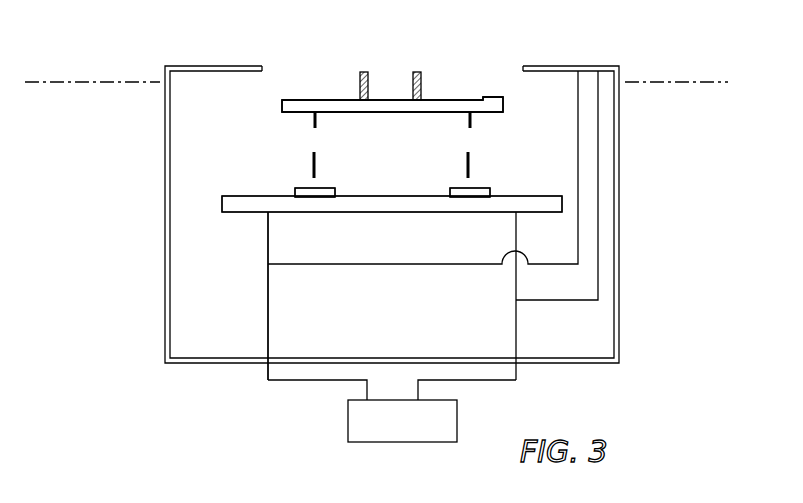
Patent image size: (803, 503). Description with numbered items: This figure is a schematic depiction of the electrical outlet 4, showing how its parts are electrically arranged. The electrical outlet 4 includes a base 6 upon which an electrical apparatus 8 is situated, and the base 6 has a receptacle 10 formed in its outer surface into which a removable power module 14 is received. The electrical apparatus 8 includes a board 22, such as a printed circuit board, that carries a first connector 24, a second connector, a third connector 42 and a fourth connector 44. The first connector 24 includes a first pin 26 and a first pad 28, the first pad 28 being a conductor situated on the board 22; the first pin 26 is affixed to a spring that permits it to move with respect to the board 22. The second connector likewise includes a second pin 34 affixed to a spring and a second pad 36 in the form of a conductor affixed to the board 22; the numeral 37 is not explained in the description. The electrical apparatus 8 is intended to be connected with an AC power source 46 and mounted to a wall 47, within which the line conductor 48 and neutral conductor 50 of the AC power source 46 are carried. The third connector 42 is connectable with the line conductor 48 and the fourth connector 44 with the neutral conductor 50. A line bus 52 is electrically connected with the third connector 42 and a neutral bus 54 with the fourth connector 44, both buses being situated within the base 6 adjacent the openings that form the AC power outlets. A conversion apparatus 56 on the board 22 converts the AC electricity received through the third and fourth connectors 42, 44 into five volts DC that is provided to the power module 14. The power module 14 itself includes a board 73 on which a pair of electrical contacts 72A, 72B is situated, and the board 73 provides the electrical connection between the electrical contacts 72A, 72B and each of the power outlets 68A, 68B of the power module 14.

The electrical outlet 4 is at (622, 306).
The base 6 is at (621, 262).
The electrical apparatus 8 is at (222, 200).
The receptacle 10 is at (268, 98).
The power module 14 is at (462, 98).
The board 22 is at (231, 214).
The first connector 24 is at (345, 192).
The first pin 26 is at (317, 166).
The first pad 28 is at (296, 190).
The second pin 34 is at (471, 166).
The second pad 36 is at (456, 190).
The second contact pad region 37 is at (492, 192).
The third connector 42 is at (268, 372).
The fourth connector 44 is at (518, 372).
The AC power source 46 is at (347, 430).
The wall 47 is at (706, 82).
The line conductor 48 is at (322, 382).
The neutral conductor 50 is at (472, 382).
The line bus 52 is at (300, 266).
The neutral bus 54 is at (540, 302).
The conversion apparatus 56 is at (260, 215).
The power outlet 68A is at (362, 72).
The power outlet 68B is at (420, 72).
The electrical contact 72A is at (313, 120).
The electrical contact 72B is at (468, 118).
The board 73 is at (485, 97).